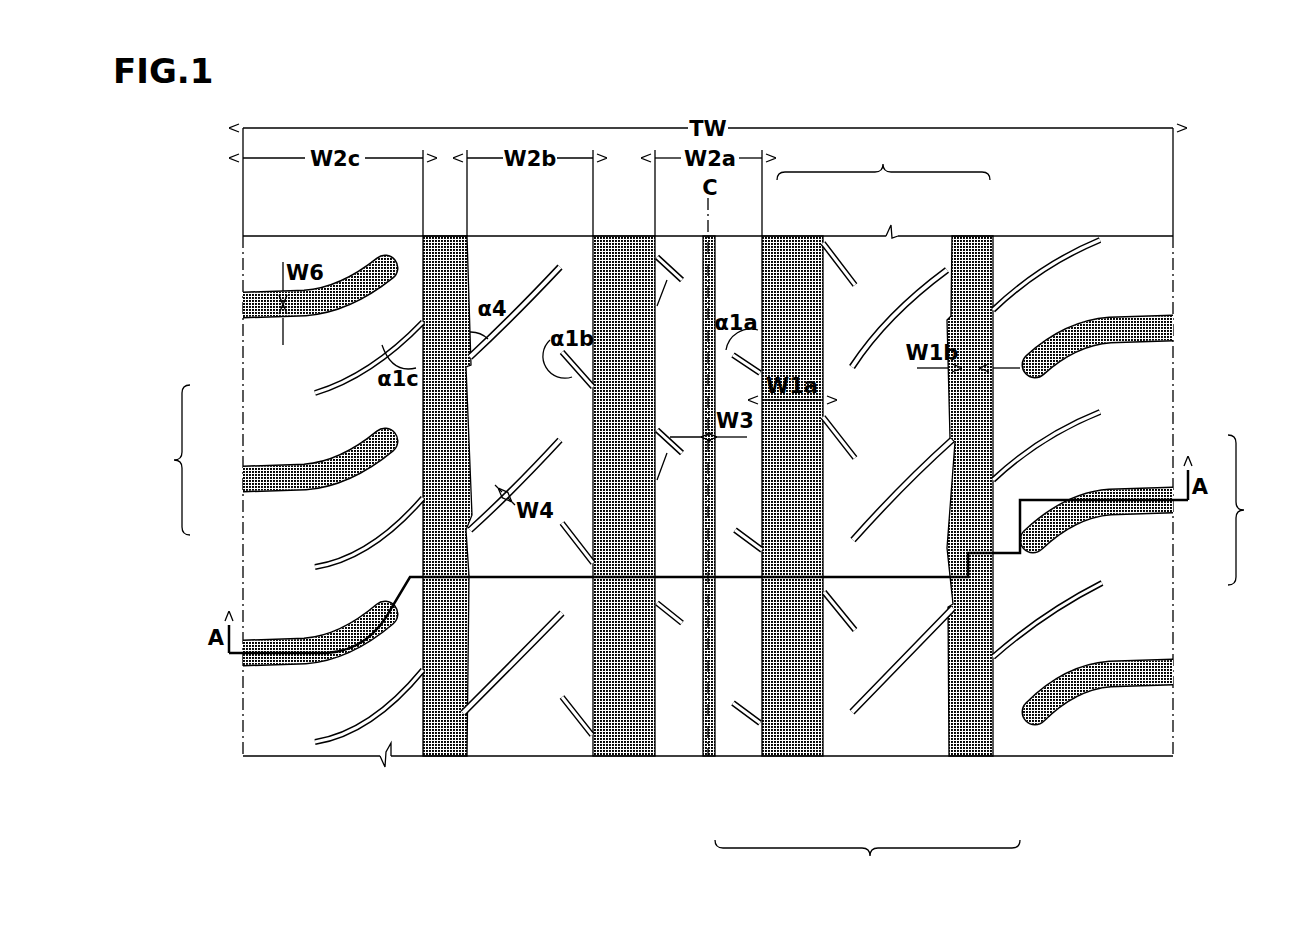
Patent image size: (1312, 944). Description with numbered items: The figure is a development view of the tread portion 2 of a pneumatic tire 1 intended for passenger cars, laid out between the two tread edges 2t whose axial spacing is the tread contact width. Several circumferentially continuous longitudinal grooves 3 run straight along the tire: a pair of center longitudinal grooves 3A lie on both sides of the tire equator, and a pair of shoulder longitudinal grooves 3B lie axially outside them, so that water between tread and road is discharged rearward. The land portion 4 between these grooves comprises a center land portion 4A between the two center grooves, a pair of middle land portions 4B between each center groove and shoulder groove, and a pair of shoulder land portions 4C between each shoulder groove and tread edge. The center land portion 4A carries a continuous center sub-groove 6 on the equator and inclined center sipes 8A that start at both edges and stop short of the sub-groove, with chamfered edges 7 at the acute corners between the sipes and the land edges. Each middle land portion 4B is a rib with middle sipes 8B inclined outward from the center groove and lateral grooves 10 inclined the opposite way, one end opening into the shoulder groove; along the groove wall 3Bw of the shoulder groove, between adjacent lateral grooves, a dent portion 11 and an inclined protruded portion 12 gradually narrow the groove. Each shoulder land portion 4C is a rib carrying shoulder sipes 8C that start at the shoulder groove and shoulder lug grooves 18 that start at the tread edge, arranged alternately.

The pneumatic tire 1 is at (1182, 188).
The tread portion 2 is at (1040, 233).
The tread edge 2t is at (240, 270).
The longitudinal grooves 3 is at (883, 159).
The center longitudinal groove 3A is at (623, 280).
The shoulder longitudinal groove 3B is at (445, 280).
The groove wall 3Bw is at (709, 485).
The land portion 4 is at (867, 865).
The center land portion 4A is at (738, 727).
The middle land portion 4B is at (532, 722).
The shoulder land portion 4C is at (297, 722).
The center sub-groove 6 is at (703, 310).
The chamfered edge 7 is at (660, 622).
The center sipe 8A is at (683, 605).
The middle sipe 8B is at (570, 377).
The shoulder sipe 8C is at (408, 332).
The lateral groove 10 is at (523, 302).
The dent portion 11 is at (465, 505).
The protruded portion 12 is at (465, 387).
The shoulder lug groove 18 is at (343, 303).